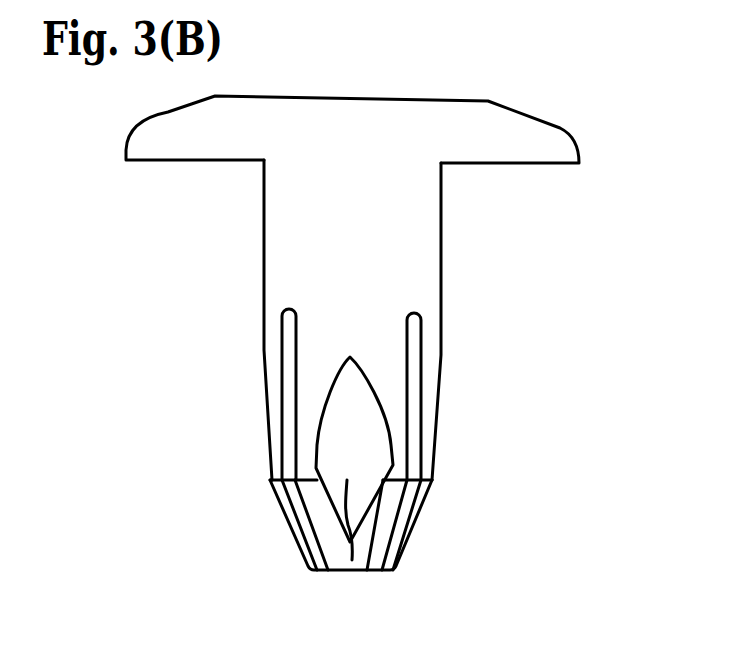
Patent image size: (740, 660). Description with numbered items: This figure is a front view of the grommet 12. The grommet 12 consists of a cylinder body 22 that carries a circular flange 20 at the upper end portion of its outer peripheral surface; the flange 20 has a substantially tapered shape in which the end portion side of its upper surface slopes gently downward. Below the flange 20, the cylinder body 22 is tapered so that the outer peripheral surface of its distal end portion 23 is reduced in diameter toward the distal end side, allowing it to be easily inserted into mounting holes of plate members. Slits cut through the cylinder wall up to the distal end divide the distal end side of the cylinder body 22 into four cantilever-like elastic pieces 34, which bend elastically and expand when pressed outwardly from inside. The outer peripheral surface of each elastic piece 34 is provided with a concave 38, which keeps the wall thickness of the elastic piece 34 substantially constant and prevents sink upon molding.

The grommet 12 is at (389, 338).
The circular flange 20 is at (528, 135).
The cylinder body 22 is at (450, 280).
The distal end portion 23 is at (290, 524).
The elastic piece 34 is at (270, 382).
The concave 38 is at (352, 560).